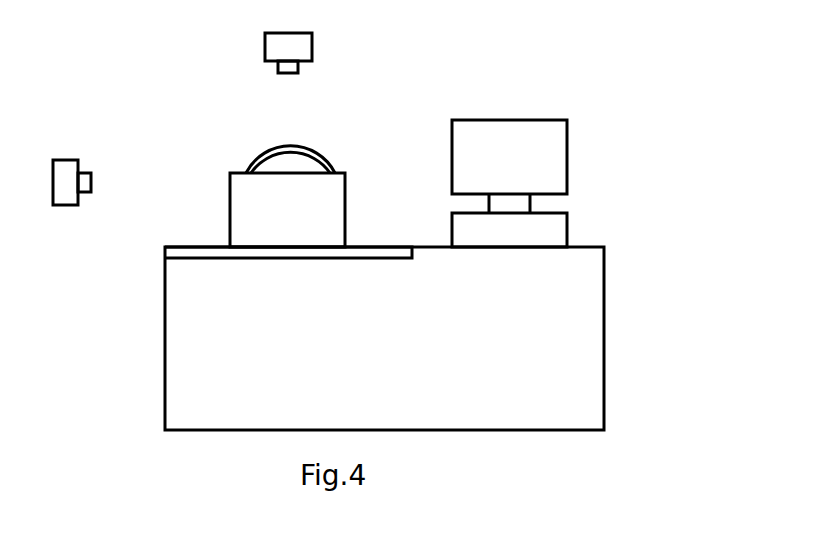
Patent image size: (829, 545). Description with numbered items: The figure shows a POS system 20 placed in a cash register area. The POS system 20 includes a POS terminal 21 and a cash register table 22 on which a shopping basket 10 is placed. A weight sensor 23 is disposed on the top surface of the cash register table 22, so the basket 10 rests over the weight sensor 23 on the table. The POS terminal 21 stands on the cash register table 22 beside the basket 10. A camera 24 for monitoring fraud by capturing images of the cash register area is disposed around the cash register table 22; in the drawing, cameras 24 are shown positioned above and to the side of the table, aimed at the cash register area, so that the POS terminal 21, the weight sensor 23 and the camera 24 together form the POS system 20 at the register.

The shopping basket 10 is at (345, 200).
The POS system 20 is at (652, 95).
The POS terminal 21 is at (570, 174).
The cash register table 22 is at (604, 308).
The weight sensor 23 is at (212, 247).
The camera 24 is at (312, 48).